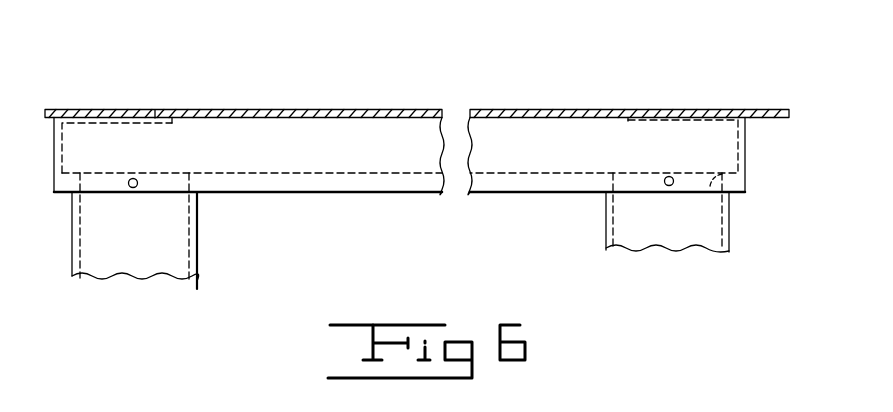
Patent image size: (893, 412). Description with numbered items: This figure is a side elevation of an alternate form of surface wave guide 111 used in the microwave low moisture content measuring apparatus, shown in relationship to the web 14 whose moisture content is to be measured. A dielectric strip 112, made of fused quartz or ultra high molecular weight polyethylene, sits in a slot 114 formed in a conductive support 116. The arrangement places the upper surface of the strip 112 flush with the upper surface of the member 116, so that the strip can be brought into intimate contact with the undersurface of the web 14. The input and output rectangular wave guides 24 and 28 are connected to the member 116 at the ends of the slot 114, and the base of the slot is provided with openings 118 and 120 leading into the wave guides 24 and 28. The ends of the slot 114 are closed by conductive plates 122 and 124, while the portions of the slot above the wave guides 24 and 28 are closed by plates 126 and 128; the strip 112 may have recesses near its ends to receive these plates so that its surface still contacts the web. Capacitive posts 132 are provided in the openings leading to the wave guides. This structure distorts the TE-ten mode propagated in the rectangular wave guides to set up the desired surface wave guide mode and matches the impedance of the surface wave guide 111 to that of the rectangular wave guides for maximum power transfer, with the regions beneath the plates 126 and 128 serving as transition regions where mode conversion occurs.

The web 14 is at (558, 109).
The surface wave guide 111 is at (492, 81).
The slot 114 is at (353, 172).
The dielectric strip 112 is at (542, 173).
The conductive plate 122 is at (63, 152).
The conductive plate 124 is at (735, 130).
The plate 126 is at (155, 118).
The plate 128 is at (687, 115).
The capacitive posts 132 is at (137, 179).
The opening 118 is at (82, 178).
The opening 120 is at (729, 211).
The wave guide 24 is at (197, 275).
The wave guide section 28 is at (606, 237).
The conductive support 116 is at (262, 192).